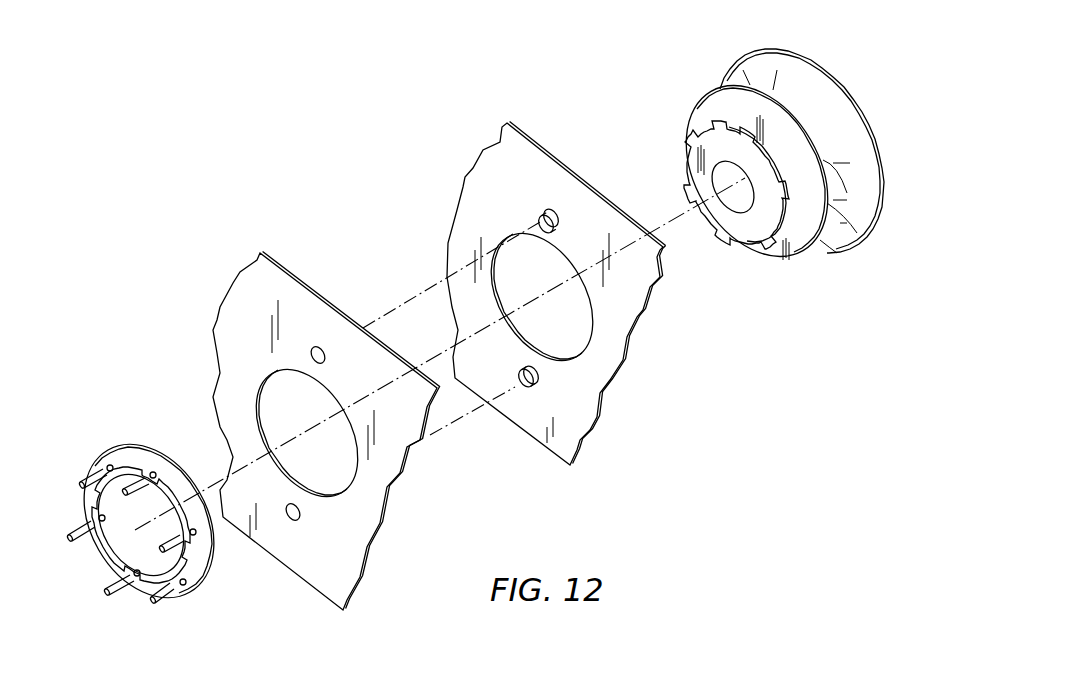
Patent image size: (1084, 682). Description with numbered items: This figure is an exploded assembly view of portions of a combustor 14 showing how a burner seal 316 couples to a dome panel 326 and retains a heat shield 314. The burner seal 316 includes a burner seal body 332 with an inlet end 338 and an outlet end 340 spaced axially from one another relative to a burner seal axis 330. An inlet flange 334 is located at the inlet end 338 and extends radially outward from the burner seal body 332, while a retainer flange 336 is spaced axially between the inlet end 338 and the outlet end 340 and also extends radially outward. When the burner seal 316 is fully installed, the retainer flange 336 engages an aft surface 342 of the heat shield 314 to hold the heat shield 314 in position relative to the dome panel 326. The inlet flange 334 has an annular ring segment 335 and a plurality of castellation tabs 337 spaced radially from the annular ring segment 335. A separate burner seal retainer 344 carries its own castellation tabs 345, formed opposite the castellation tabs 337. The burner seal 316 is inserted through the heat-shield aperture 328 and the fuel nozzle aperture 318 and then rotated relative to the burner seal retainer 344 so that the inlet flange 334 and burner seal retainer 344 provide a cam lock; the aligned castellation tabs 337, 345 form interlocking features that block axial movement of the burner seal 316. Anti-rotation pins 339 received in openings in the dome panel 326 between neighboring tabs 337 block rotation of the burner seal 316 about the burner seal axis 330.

The electrical connector assembly 14 is at (525, 657).
The heat shield 314 is at (462, 152).
The burner seal 316 is at (787, 190).
The fuel nozzle aperture 318 is at (263, 380).
The dome panel 326 is at (237, 252).
The heat-shield aperture 328 is at (500, 240).
The burner seal axis 330 is at (200, 478).
The burner seal body 332 is at (868, 214).
The inlet flange 334 is at (675, 162).
The annular ring segment 335 is at (730, 237).
The retainer flange 336 is at (698, 103).
The castellation tabs 337 is at (803, 230).
The inlet end 338 is at (742, 260).
The anti-rotation pins 339 is at (68, 517).
The outlet end 340 is at (870, 117).
The aft surface 342 is at (530, 137).
The burner seal retainer 344 is at (141, 538).
The castellation tabs 345 is at (143, 543).